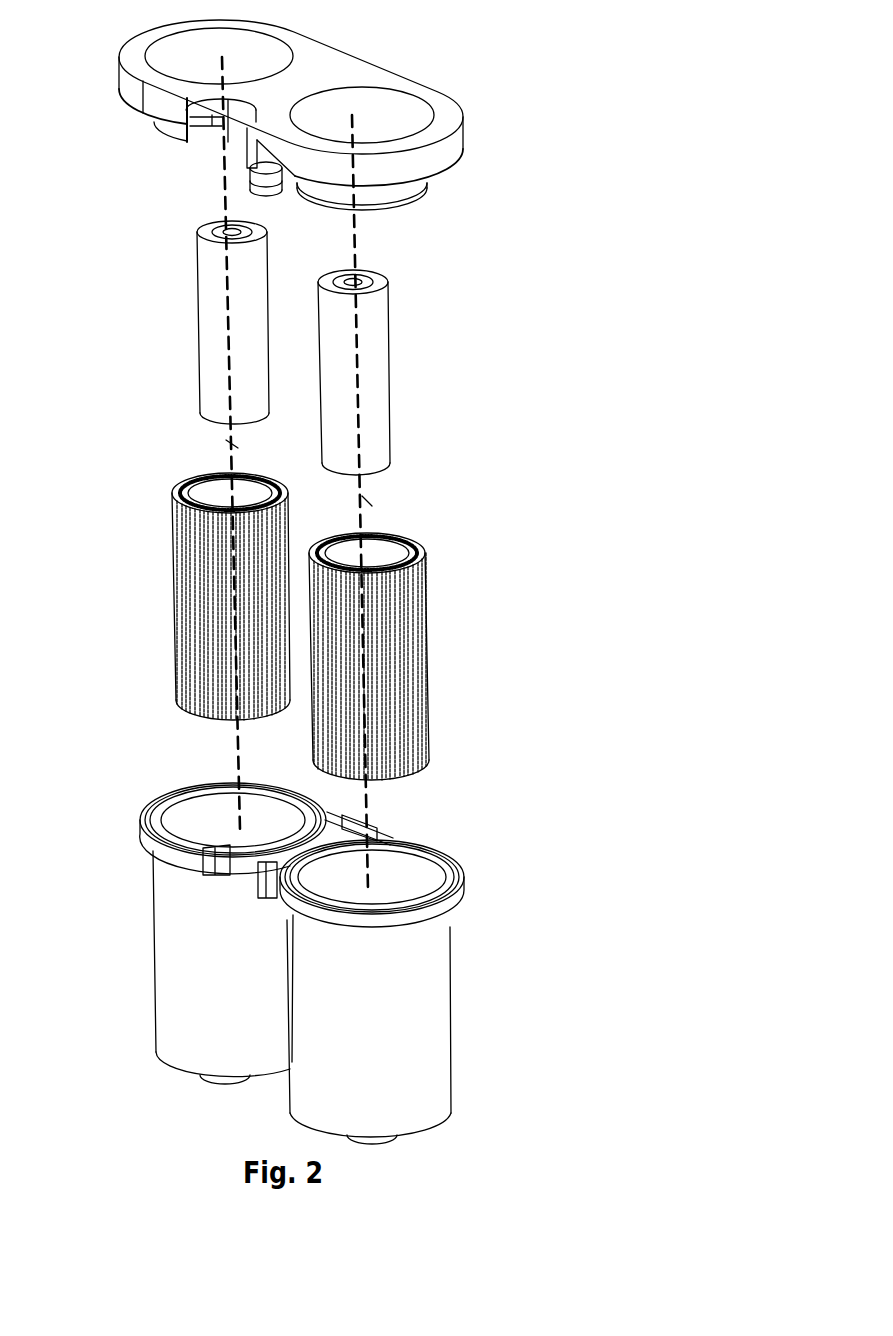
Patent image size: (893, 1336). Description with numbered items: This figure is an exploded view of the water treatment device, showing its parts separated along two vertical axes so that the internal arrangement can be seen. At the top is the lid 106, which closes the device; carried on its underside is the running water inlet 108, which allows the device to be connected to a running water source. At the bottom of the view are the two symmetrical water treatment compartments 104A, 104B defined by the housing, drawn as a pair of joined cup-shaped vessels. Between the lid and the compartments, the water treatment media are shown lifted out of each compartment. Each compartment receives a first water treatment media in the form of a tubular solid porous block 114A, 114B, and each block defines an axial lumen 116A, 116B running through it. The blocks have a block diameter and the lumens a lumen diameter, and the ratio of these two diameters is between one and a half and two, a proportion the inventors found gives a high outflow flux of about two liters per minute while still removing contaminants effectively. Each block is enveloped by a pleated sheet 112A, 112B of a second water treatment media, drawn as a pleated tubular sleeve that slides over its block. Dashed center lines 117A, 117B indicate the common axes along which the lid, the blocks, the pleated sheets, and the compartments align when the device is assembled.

The lid 106 is at (373, 70).
The running water inlet 108 is at (262, 178).
The tubular solid block 114B is at (178, 315).
The axial lumen 116B is at (232, 232).
The second axis 117B is at (232, 444).
The tubular solid block 114A is at (416, 361).
The axial lumen 116A is at (356, 282).
The first axis 117A is at (370, 500).
The pleated sheet 112B is at (195, 625).
The pleated sheet 112A is at (412, 695).
The water treatment compartment 104B is at (177, 933).
The water treatment compartment 104A is at (437, 980).